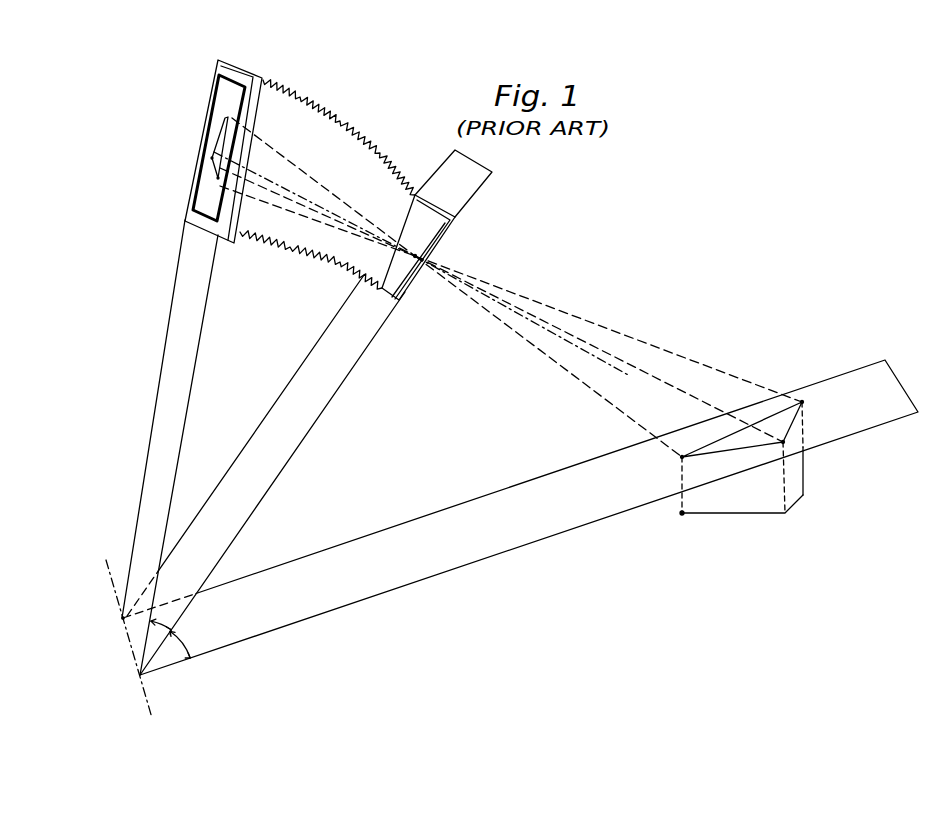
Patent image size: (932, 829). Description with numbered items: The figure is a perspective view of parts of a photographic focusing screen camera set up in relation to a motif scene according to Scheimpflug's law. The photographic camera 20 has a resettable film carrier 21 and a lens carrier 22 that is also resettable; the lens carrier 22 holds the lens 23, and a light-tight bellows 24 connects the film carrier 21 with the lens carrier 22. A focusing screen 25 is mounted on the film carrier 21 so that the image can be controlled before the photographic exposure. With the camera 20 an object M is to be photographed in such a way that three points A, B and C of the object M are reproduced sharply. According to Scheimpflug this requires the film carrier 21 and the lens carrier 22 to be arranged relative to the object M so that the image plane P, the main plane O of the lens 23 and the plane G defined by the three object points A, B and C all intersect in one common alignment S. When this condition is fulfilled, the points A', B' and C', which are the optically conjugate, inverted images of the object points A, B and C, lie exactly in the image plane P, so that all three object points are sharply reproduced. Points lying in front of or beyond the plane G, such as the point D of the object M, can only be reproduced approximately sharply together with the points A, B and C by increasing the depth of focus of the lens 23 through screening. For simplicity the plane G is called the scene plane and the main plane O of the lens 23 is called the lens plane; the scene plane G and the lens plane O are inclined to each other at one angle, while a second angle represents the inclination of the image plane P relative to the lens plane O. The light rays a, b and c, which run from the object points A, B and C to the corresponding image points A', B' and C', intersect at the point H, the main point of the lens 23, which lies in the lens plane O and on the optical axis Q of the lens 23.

The photographic camera 20 is at (367, 116).
The film carrier 21 is at (250, 75).
The lens carrier 22 is at (399, 298).
The lens 23 is at (441, 258).
The bellows 24 is at (298, 249).
The focusing screen 25 is at (222, 92).
The common alignment S is at (108, 579).
The image plane P is at (168, 330).
The main plane of the lens O is at (335, 392).
The scene plane G is at (546, 473).
The main point of the lens H is at (414, 254).
The object M is at (799, 477).
The object point A is at (666, 469).
The object point B is at (818, 399).
The object point C is at (810, 433).
The object point D is at (682, 515).
The image point A' is at (248, 144).
The image point B' is at (188, 188).
The image point C' is at (186, 146).
The light ray a is at (558, 368).
The light ray b is at (640, 344).
The light ray c is at (558, 353).
The optical axis Q is at (627, 378).